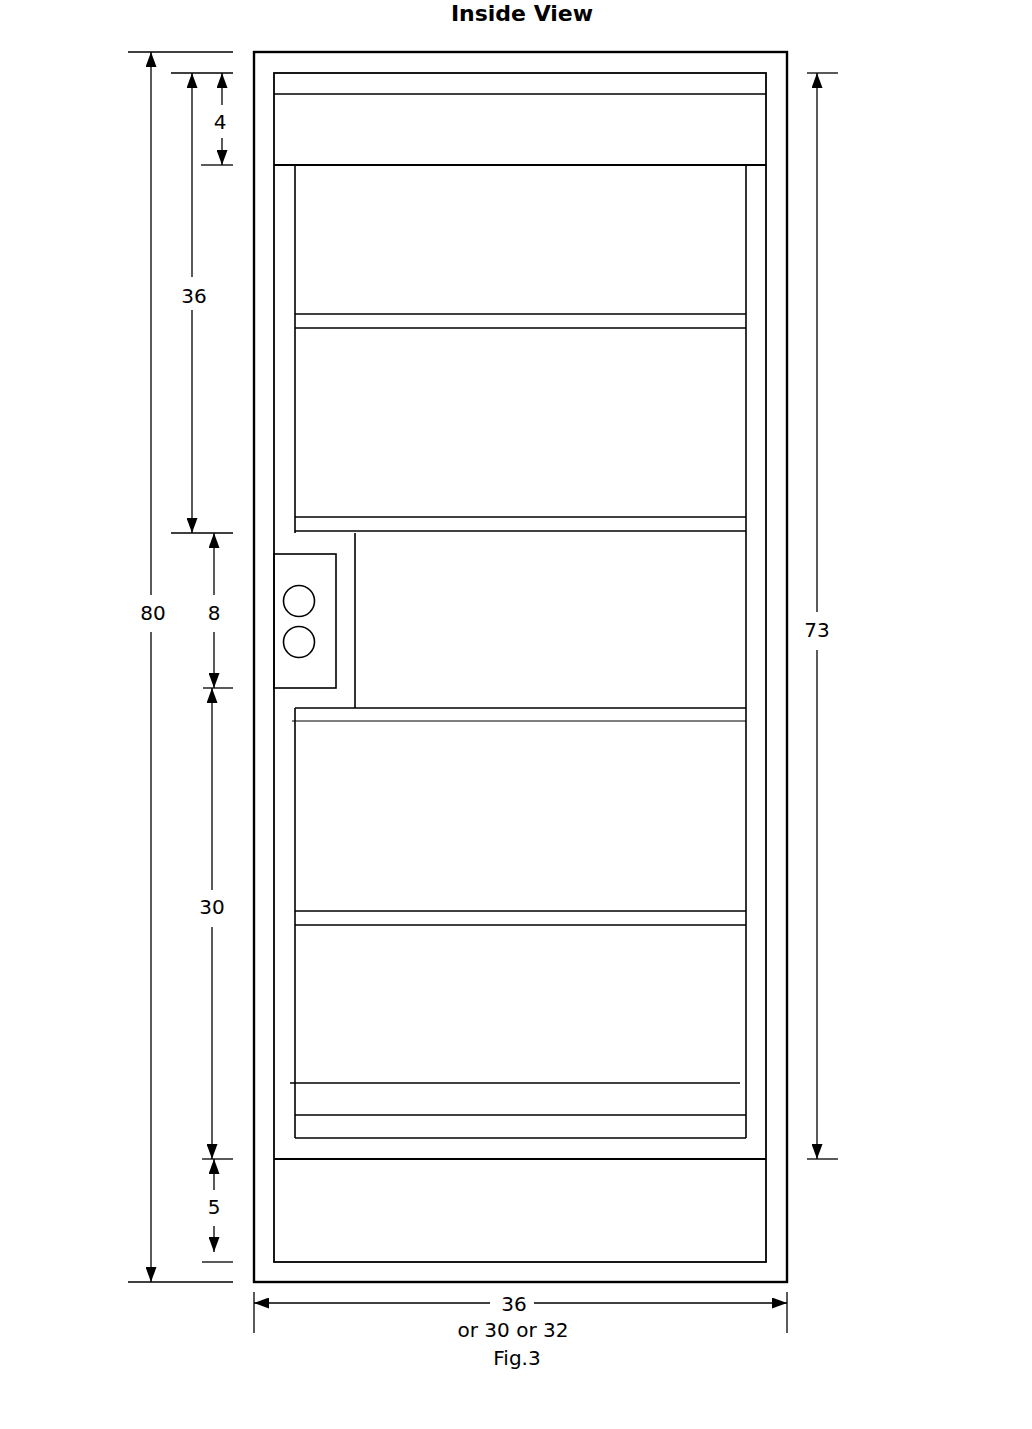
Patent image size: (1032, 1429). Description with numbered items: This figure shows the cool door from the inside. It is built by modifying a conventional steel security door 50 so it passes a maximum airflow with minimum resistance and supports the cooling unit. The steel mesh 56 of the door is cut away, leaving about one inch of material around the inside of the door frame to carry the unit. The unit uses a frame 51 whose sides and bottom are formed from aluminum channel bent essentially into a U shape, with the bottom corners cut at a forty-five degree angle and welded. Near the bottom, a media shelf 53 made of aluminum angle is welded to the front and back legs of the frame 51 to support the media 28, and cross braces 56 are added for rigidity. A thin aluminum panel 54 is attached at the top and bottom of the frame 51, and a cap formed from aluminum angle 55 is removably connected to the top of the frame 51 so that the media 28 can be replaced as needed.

The steel security door 50 is at (263, 410).
The frame 51 is at (284, 740).
The aluminum panel 54 is at (690, 82).
The aluminum angle cap 55 is at (668, 132).
The cross braces 56 is at (658, 318).
The media 28 is at (632, 438).
The media shelf 53 is at (608, 1102).